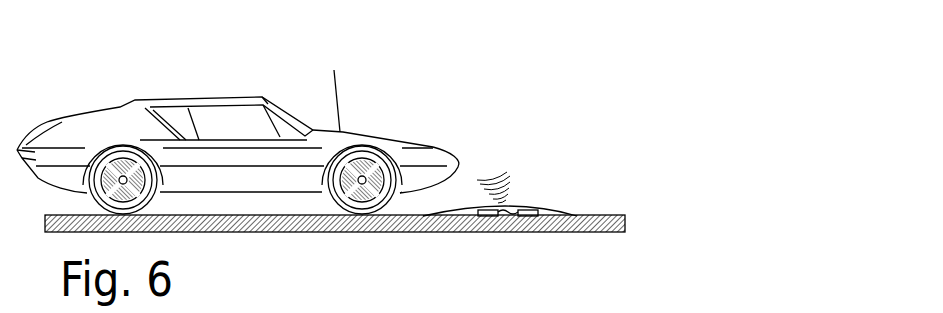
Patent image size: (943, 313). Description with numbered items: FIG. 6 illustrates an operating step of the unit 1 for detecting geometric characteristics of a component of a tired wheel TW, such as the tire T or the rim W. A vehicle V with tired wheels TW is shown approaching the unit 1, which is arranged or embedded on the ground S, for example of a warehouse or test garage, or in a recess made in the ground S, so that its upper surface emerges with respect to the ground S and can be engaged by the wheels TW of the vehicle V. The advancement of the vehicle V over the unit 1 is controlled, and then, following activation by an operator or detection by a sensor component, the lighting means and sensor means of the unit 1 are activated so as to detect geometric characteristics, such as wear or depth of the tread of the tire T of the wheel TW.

The vehicle V is at (218, 93).
The tired wheel TW is at (107, 150).
The rim W is at (350, 185).
The tire T is at (380, 203).
The ground S is at (600, 223).
The unit 1 is at (527, 207).